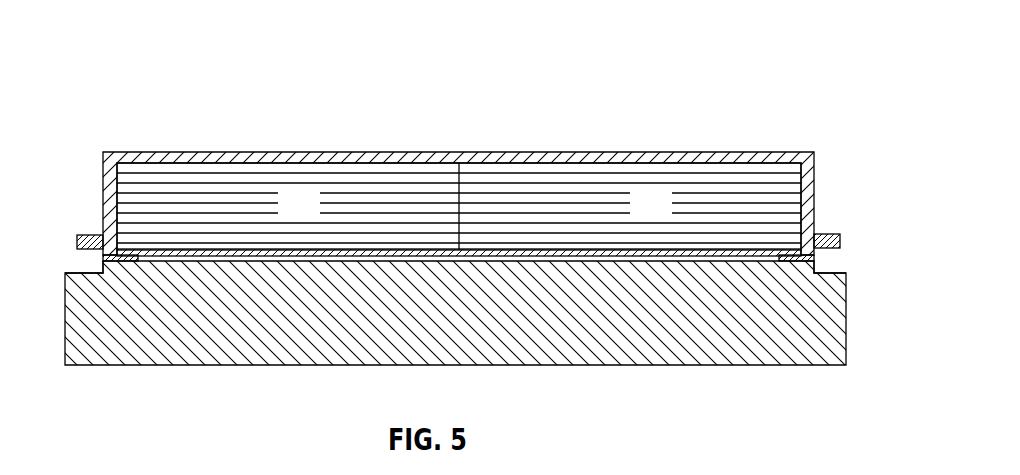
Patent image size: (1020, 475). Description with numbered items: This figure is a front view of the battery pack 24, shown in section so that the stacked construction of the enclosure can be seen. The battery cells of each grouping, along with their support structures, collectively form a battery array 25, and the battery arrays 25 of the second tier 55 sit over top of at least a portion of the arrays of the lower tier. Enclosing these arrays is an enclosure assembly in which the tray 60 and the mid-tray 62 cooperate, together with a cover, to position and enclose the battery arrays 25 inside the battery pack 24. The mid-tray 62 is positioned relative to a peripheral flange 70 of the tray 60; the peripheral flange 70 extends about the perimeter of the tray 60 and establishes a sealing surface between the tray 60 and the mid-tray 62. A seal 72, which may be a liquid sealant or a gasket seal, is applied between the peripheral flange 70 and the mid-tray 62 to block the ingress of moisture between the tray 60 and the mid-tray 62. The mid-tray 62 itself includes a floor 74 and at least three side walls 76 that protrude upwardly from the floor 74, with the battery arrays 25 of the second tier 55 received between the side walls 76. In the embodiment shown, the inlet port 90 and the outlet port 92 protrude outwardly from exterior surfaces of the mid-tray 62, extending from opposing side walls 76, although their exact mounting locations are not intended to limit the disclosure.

The battery pack 24 is at (465, 185).
The battery array 25 is at (314, 222).
The second tier 55 is at (459, 169).
The tray 60 is at (838, 313).
The mid-tray 62 is at (463, 172).
The peripheral flange 70 is at (118, 262).
The seal 72 is at (65, 274).
The floor 74 is at (452, 258).
The side wall 76 is at (500, 154).
The inlet port 90 is at (823, 234).
The outlet port 92 is at (96, 235).